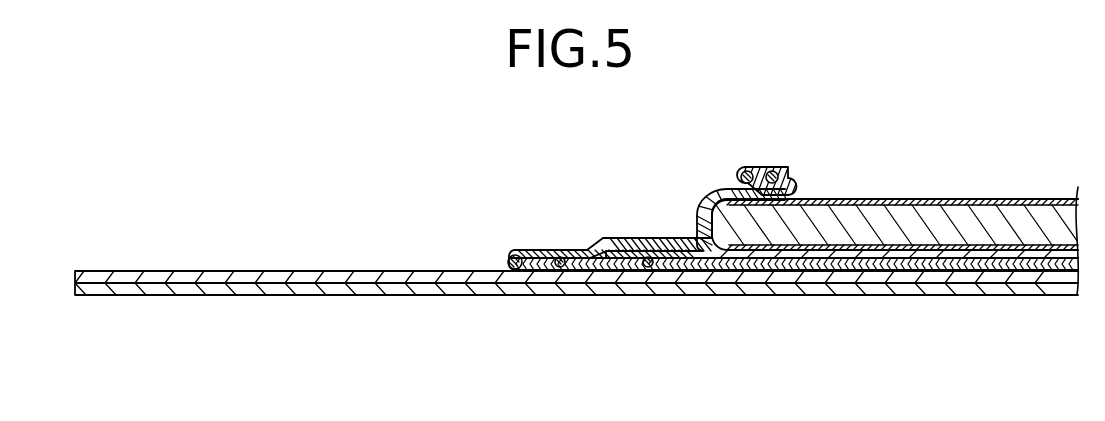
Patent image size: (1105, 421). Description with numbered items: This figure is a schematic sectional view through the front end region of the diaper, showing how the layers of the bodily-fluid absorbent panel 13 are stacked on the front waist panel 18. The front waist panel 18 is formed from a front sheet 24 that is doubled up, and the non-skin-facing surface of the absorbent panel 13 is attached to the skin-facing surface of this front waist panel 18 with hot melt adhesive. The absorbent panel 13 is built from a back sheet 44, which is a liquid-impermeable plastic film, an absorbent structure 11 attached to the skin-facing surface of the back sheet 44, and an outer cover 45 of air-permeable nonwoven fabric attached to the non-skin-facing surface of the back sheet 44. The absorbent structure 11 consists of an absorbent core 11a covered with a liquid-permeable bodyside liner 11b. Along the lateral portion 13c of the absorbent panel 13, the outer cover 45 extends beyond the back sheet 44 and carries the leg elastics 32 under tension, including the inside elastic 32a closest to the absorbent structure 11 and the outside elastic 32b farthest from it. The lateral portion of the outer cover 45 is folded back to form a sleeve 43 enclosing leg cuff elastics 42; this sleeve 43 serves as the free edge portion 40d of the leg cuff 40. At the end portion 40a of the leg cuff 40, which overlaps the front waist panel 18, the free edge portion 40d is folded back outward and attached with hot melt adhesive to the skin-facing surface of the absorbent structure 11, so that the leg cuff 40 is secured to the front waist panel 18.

The absorbent structure 11 is at (898, 198).
The absorbent core 11a is at (993, 225).
The bodyside liner 11b is at (1030, 198).
The bodily-fluid absorbent panel 13 is at (955, 198).
The lateral portion of the bodily-fluid absorbent panel 13c is at (507, 262).
The front waist panel 18 is at (576, 324).
The front sheet 24 is at (268, 288).
The leg elastics 32 is at (560, 267).
The inside elastic 32a is at (648, 267).
The outside elastic 32b is at (511, 252).
The leg cuff 40 is at (702, 200).
The end portion of the leg cuff 40a is at (800, 186).
The free edge portion of the leg cuff 40d is at (747, 170).
The leg cuff elastics 42 is at (772, 170).
The sleeve 43 is at (702, 146).
The back sheet 44 is at (797, 257).
The outer cover 45 is at (747, 265).